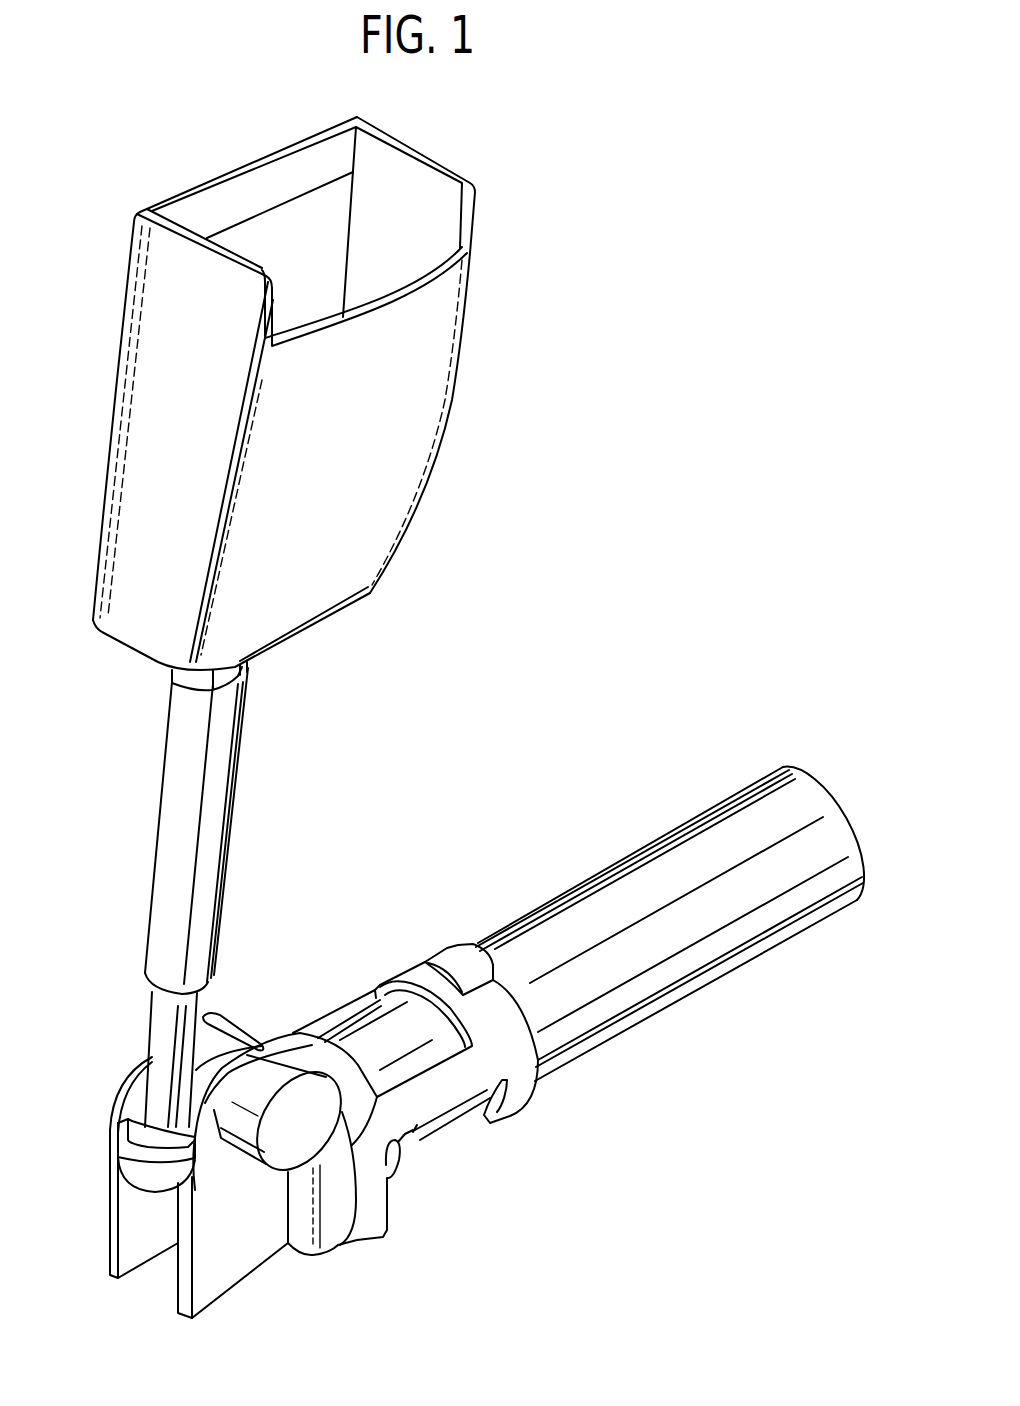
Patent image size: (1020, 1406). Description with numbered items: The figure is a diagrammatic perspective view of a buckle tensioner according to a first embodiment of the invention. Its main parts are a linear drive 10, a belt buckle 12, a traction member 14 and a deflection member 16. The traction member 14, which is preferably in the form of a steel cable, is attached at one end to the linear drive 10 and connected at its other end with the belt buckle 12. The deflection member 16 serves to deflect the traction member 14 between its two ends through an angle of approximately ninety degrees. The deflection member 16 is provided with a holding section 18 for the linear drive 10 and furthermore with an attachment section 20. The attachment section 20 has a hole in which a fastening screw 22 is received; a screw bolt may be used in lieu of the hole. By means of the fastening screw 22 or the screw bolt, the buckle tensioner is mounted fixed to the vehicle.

The linear drive 10 is at (722, 822).
The belt buckle 12 is at (368, 572).
The traction member 14 is at (163, 1030).
The deflection member 16 is at (342, 1262).
The holding section 18 is at (413, 968).
The attachment section 20 is at (218, 1048).
The fastening screw 22 is at (283, 1067).